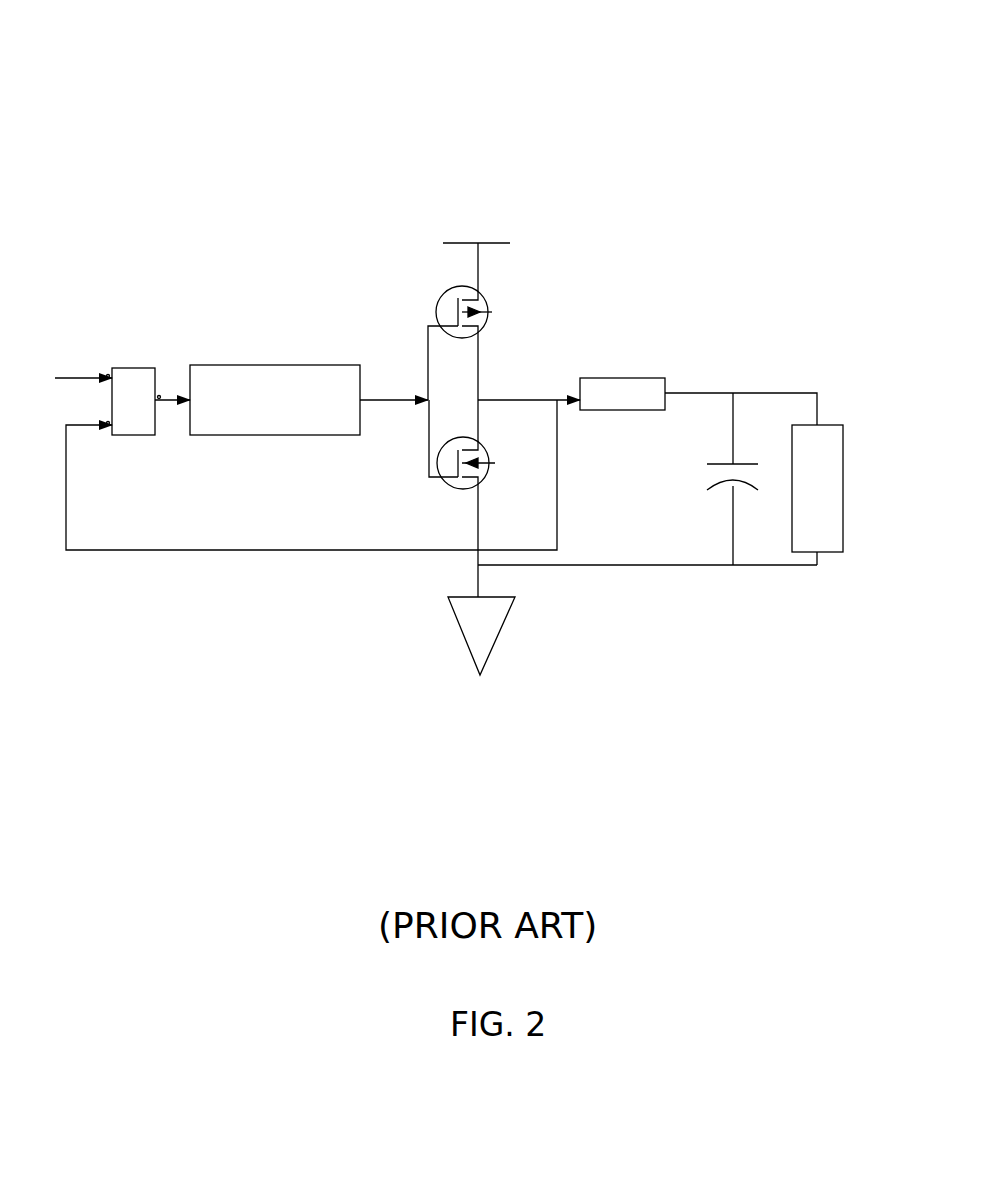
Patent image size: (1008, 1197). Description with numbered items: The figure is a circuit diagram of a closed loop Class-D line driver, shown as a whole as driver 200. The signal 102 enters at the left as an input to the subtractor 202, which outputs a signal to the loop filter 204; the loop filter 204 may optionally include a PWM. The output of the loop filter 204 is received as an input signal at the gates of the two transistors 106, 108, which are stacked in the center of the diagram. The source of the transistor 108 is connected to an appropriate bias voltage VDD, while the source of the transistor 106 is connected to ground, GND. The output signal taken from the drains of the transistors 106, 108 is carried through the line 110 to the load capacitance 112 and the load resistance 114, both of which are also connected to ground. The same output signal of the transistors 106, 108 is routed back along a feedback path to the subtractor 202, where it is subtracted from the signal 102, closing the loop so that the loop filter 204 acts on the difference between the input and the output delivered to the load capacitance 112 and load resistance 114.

The prior art switching amplifier 200 is at (508, 24).
The signal 102 is at (83, 360).
The subtractor 202 is at (124, 372).
The loop filter 204 is at (274, 366).
The transistor 108 is at (440, 300).
The transistor 106 is at (446, 482).
The line 110 is at (624, 378).
The load capacitance 112 is at (730, 460).
The load resistance 114 is at (850, 457).